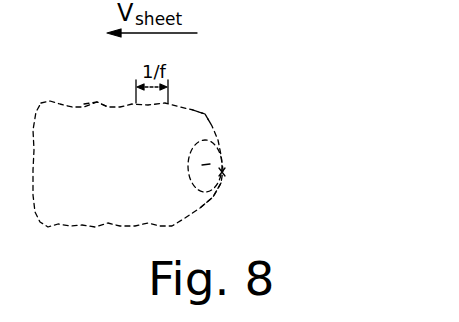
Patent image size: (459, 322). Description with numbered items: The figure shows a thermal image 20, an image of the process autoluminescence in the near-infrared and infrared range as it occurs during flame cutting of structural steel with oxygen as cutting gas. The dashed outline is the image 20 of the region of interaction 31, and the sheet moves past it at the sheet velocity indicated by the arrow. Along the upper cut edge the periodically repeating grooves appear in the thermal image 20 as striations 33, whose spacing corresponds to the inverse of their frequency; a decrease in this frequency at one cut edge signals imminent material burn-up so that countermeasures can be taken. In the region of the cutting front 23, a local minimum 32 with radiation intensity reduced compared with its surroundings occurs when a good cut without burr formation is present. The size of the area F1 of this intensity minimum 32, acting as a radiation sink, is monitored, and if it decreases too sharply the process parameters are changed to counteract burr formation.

The thermal image 20 is at (240, 118).
The cutting front 23 is at (231, 172).
The region of interaction 31 is at (205, 114).
The local minimum 32 is at (222, 188).
The striations 33 is at (97, 102).
The area of the intensity minimum F1 is at (222, 165).